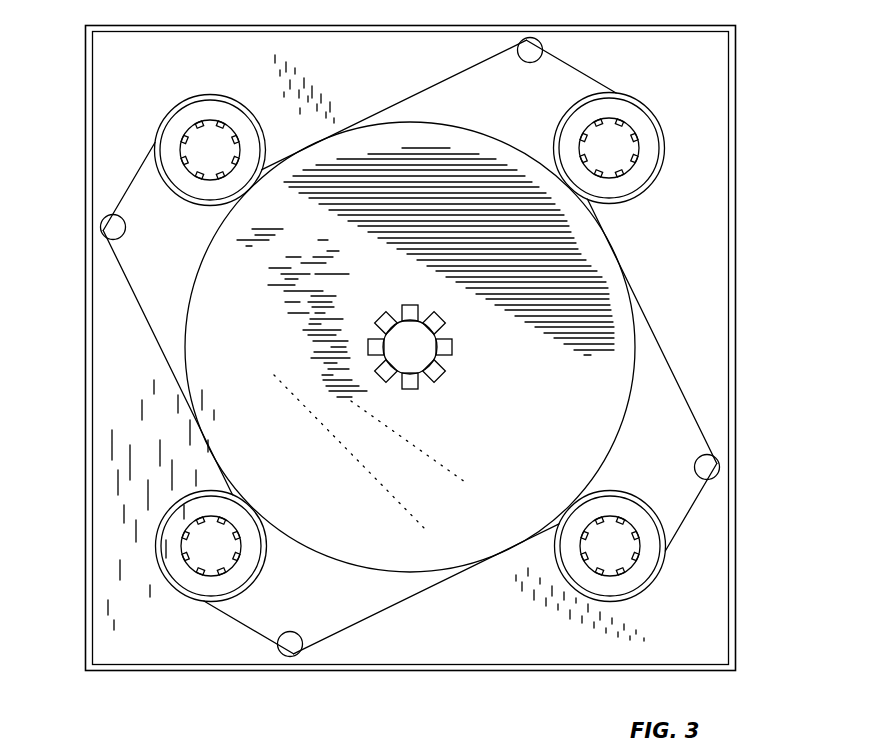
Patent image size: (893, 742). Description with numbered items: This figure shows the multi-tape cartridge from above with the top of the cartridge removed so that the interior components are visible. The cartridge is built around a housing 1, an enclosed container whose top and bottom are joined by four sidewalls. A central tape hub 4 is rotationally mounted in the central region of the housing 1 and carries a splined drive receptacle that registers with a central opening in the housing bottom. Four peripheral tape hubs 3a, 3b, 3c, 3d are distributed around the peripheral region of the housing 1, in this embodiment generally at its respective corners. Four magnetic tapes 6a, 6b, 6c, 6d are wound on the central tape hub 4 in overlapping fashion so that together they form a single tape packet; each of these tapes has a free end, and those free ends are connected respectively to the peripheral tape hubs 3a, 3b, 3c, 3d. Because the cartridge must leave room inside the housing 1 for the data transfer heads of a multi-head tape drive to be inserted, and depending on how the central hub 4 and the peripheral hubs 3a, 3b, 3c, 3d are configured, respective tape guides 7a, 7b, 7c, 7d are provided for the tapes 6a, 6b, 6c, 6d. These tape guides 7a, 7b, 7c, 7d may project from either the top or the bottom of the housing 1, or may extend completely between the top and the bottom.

The housing 1 is at (732, 143).
The peripheral tape hub 3a is at (195, 110).
The peripheral tape hub 3b is at (172, 556).
The peripheral tape hub 3c is at (638, 575).
The peripheral tape hub 3d is at (645, 135).
The central tape hub 4 is at (574, 270).
The magnetic tape 6a is at (160, 353).
The magnetic tape 6b is at (412, 601).
The magnetic tape 6c is at (660, 340).
The magnetic tape 6d is at (438, 80).
The tape guide 7a is at (108, 228).
The tape guide 7b is at (290, 647).
The tape guide 7c is at (708, 468).
The tape guide 7d is at (530, 53).